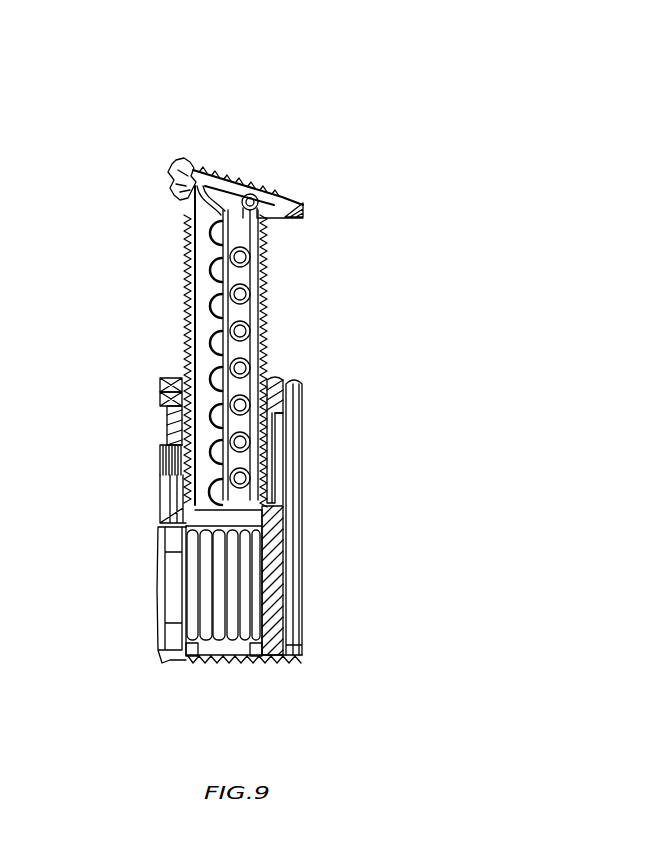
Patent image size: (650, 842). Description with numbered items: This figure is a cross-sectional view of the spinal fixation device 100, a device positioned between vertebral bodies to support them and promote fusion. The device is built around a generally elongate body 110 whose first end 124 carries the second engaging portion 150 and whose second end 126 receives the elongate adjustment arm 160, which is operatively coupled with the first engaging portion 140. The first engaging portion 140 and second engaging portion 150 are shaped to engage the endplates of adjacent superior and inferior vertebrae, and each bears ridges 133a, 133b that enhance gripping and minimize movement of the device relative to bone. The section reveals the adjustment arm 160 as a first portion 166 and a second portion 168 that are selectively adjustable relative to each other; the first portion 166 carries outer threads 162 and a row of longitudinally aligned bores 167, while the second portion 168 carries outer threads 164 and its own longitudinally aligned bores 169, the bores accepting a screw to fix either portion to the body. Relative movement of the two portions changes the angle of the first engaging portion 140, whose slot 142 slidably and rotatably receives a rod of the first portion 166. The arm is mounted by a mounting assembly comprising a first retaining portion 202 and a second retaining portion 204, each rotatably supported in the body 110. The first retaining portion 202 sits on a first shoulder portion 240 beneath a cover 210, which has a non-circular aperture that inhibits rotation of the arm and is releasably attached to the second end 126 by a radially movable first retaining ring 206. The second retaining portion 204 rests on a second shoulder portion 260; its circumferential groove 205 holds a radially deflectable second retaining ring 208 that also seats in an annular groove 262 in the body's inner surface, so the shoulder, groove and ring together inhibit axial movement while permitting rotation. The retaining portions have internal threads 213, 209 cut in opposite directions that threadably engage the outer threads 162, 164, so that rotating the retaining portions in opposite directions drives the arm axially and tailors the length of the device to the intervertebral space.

The spinal fixation device 100 is at (305, 150).
The elongate body 110 is at (302, 566).
The first end 124 is at (293, 657).
The second end 126 is at (298, 397).
The ridges 133a is at (287, 197).
The ridges 133b is at (253, 663).
The first engaging portion 140 is at (220, 178).
The slot 142 is at (180, 180).
The second engaging portion 150 is at (197, 662).
The elongate adjustment arm 160 is at (174, 224).
The outer threads 162 is at (182, 265).
The outer threads 164 is at (288, 272).
The first portion 166 is at (178, 210).
The longitudinally aligned bores 167 is at (186, 242).
The second portion 168 is at (285, 240).
The longitudinally aligned bores 169 is at (290, 262).
The first retaining portion 202 is at (163, 405).
The second retaining portion 204 is at (300, 467).
The circumferential groove 205 is at (168, 475).
The first retaining ring 206 is at (284, 385).
The second retaining ring 208 is at (300, 450).
The internal threads 209 is at (158, 484).
The cover 210 is at (178, 377).
The internal threads 213 is at (272, 365).
The first shoulder portion 240 is at (167, 432).
The second shoulder portion 260 is at (300, 485).
The annular groove 262 is at (303, 410).